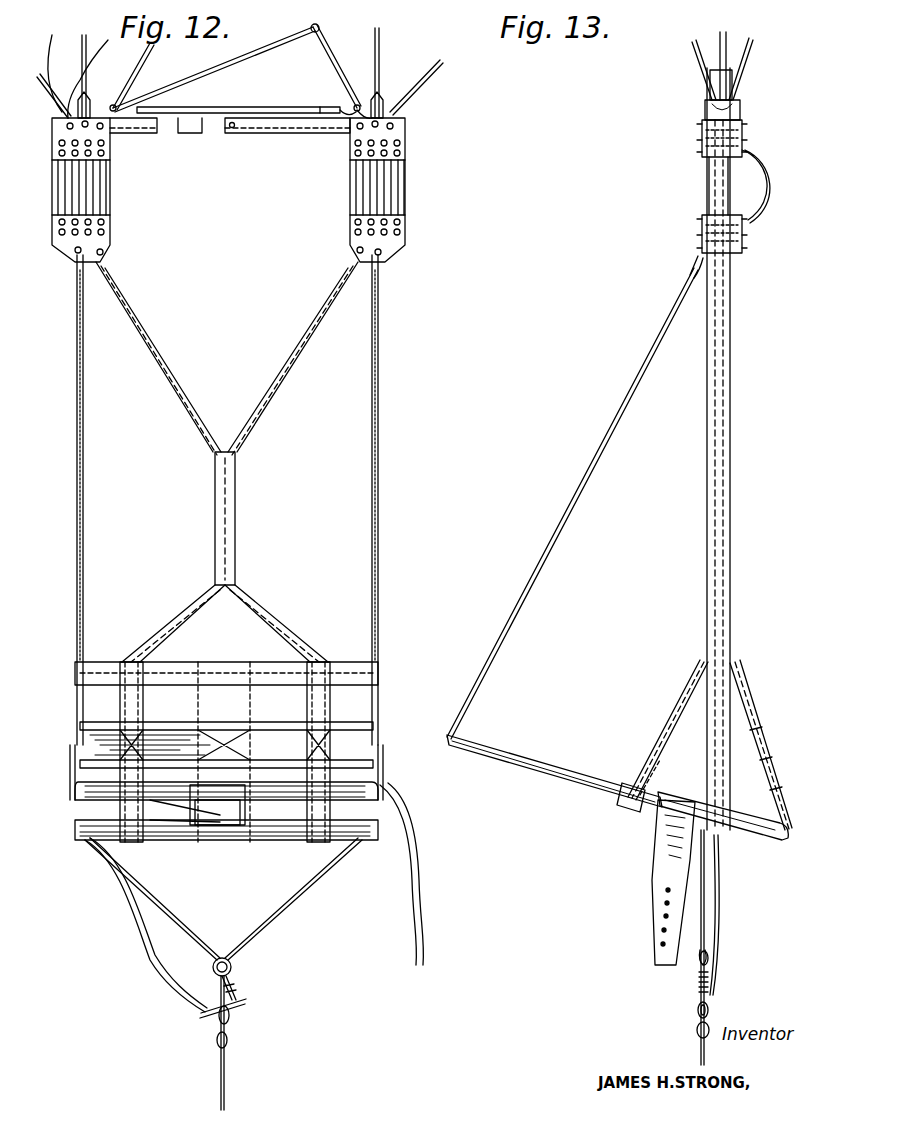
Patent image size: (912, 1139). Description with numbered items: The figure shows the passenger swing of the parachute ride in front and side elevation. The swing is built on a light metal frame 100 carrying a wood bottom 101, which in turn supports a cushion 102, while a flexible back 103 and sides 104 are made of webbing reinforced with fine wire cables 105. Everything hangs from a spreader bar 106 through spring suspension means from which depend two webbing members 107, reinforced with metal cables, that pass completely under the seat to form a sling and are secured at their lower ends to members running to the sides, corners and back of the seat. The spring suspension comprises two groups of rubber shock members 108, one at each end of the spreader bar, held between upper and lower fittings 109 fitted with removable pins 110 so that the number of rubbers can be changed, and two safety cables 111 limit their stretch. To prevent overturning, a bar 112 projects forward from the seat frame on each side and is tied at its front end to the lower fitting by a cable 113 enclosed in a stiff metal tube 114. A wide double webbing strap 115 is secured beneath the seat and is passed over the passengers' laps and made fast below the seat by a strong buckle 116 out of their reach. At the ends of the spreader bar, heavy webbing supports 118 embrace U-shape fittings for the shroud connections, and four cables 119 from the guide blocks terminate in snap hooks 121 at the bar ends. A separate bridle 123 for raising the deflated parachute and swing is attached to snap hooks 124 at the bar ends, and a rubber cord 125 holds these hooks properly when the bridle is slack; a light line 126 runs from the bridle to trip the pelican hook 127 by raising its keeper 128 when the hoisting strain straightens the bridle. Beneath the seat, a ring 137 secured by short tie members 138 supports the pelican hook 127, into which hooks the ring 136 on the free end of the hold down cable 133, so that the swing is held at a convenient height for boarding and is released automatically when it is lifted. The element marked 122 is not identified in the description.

In FIG. 12, the light metal frame 100 is at (95, 784).
In FIG. 13, the light metal frame 100 is at (745, 838).
In FIG. 12, the wood bottom 101 is at (170, 835).
In FIG. 13, the cushion 102 is at (625, 785).
In FIG. 12, the flexible back 103 is at (178, 680).
In FIG. 13, the flexible back 103 is at (800, 700).
In FIG. 13, the sides 104 is at (708, 705).
In FIG. 12, the fine wire cables 105 is at (110, 265).
In FIG. 13, the fine wire cables 105 is at (712, 572).
In FIG. 12, the spreader bar 106 is at (255, 130).
In FIG. 13, the spreader bar 106 is at (702, 133).
In FIG. 12, the webbing members 107 is at (268, 375).
In FIG. 13, the webbing members 107 is at (722, 398).
In FIG. 12, the rubber shock members 108 is at (80, 191).
In FIG. 13, the rubber shock members 108 is at (707, 198).
In FIG. 12, the upper and lower fittings 109 is at (405, 132).
In FIG. 12, the removable pins 110 is at (405, 148).
In FIG. 13, the removable pins 110 is at (702, 150).
In FIG. 13, the safety cables 111 is at (765, 197).
In FIG. 12, the bar 112 is at (380, 760).
In FIG. 13, the bar 112 is at (515, 765).
In FIG. 13, the cable 113 is at (690, 268).
In FIG. 12, the stiff metal tube 114 is at (84, 371).
In FIG. 13, the stiff metal tube 114 is at (535, 562).
In FIG. 12, the webbing strap 115 is at (408, 862).
In FIG. 13, the webbing strap 115 is at (655, 850).
In FIG. 12, the buckle 116 is at (225, 827).
In FIG. 12, the webbing supports 118 is at (103, 47).
In FIG. 13, the webbing supports 118 is at (706, 100).
In FIG. 12, the cables 119 is at (52, 52).
In FIG. 13, the cables 119 is at (704, 80).
In FIG. 12, the snap hooks 121 is at (98, 62).
In FIG. 12, the bar end 122 is at (325, 108).
In FIG. 12, the bridle 123 is at (210, 50).
In FIG. 13, the bridle 123 is at (725, 45).
In FIG. 12, the snap hooks 124 is at (130, 78).
In FIG. 12, the rubber cord 125 is at (233, 100).
In FIG. 12, the light line 126 is at (140, 950).
In FIG. 13, the light line 126 is at (720, 932).
In FIG. 12, the pelican hook 127 is at (215, 1018).
In FIG. 13, the pelican hook 127 is at (709, 1010).
In FIG. 12, the keeper 128 is at (195, 1010).
In FIG. 13, the keeper 128 is at (697, 1008).
In FIG. 12, the hold down cable 133 is at (219, 1102).
In FIG. 13, the hold down cable 133 is at (700, 1056).
In FIG. 12, the ring 136 is at (228, 1035).
In FIG. 13, the ring 136 is at (697, 1030).
In FIG. 12, the ring 137 is at (232, 967).
In FIG. 13, the ring 137 is at (698, 968).
In FIG. 12, the tie members 138 is at (255, 930).
In FIG. 13, the tie members 138 is at (705, 897).